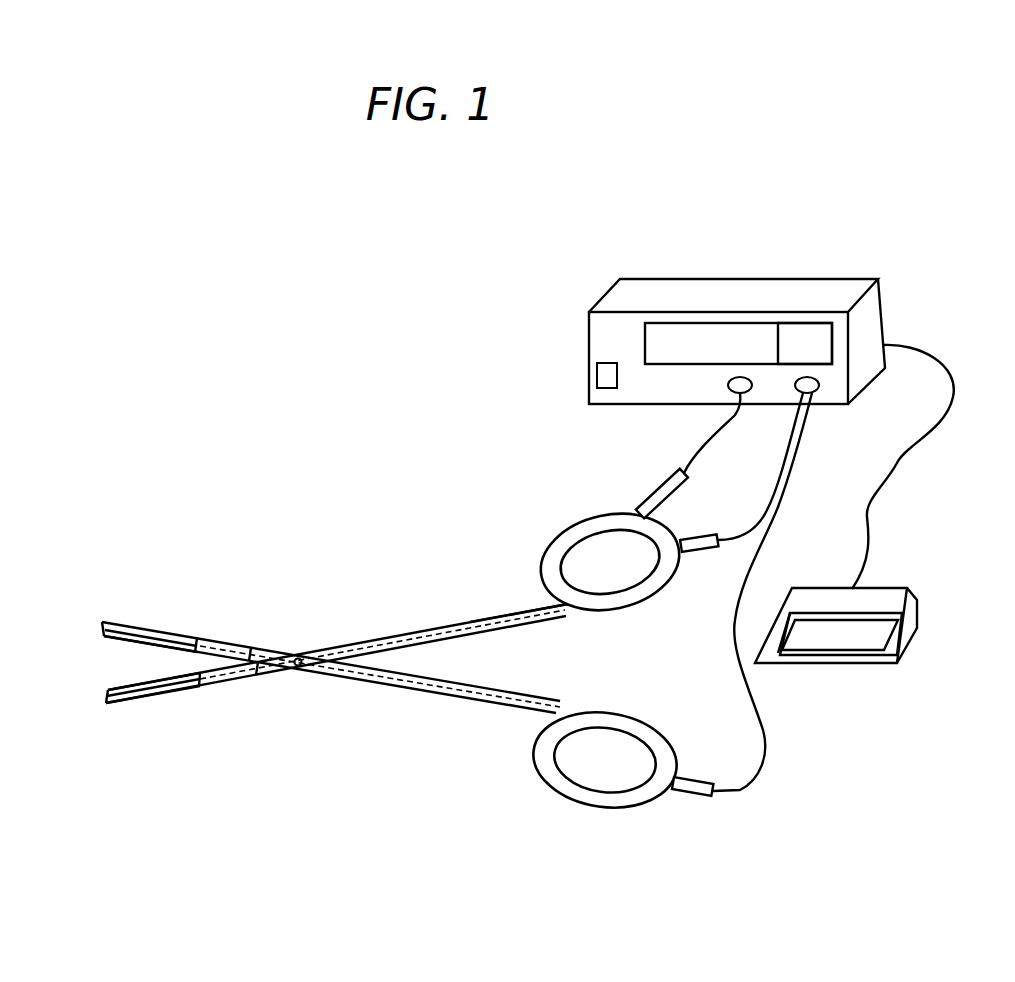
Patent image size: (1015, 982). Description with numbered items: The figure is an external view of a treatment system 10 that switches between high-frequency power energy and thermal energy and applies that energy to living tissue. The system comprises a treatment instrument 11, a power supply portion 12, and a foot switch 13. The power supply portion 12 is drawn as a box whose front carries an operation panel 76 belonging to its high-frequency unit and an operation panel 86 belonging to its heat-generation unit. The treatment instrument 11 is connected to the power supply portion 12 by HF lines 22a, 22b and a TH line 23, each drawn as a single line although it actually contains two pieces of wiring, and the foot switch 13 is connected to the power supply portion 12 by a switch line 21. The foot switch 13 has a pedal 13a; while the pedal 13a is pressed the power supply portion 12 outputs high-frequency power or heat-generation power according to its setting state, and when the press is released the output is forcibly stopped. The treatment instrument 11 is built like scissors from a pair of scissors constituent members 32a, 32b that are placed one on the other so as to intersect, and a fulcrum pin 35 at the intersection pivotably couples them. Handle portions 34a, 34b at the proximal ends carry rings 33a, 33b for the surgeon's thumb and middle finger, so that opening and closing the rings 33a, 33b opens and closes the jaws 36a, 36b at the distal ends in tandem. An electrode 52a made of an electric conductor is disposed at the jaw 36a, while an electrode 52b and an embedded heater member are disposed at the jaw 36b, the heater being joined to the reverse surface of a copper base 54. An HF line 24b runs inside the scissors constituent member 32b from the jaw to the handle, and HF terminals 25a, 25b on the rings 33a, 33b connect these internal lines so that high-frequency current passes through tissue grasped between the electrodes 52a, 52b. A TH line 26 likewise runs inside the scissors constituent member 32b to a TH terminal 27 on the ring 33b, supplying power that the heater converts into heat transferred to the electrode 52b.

The treatment system 10 is at (440, 472).
The treatment instrument 11 is at (368, 765).
The power supply portion 12 is at (757, 277).
The foot switch 13 is at (896, 590).
The pedal 13a is at (808, 656).
The switch line 21 is at (932, 452).
The HF line 22a is at (795, 490).
The HF line 22b is at (767, 510).
The TH line 23 is at (707, 433).
The HF line 24b is at (421, 637).
The HF terminal 25a is at (695, 778).
The HF terminal 25b is at (700, 548).
The TH line 26 is at (505, 636).
The TH terminal 27 is at (655, 492).
The scissors constituent member 32a is at (360, 685).
The scissors constituent member 32b is at (356, 643).
The ring 33a is at (541, 787).
The ring 33b is at (557, 543).
The handle portion 34a is at (642, 719).
The handle portion 34b is at (637, 603).
The fulcrum pin 35 is at (299, 668).
The jaw 36a is at (120, 617).
The jaw 36b is at (108, 707).
The electrode 52a is at (115, 645).
The electrode 52b is at (117, 688).
The base 54 is at (175, 697).
The operation panel 76 is at (807, 322).
The operation panel 86 is at (718, 322).